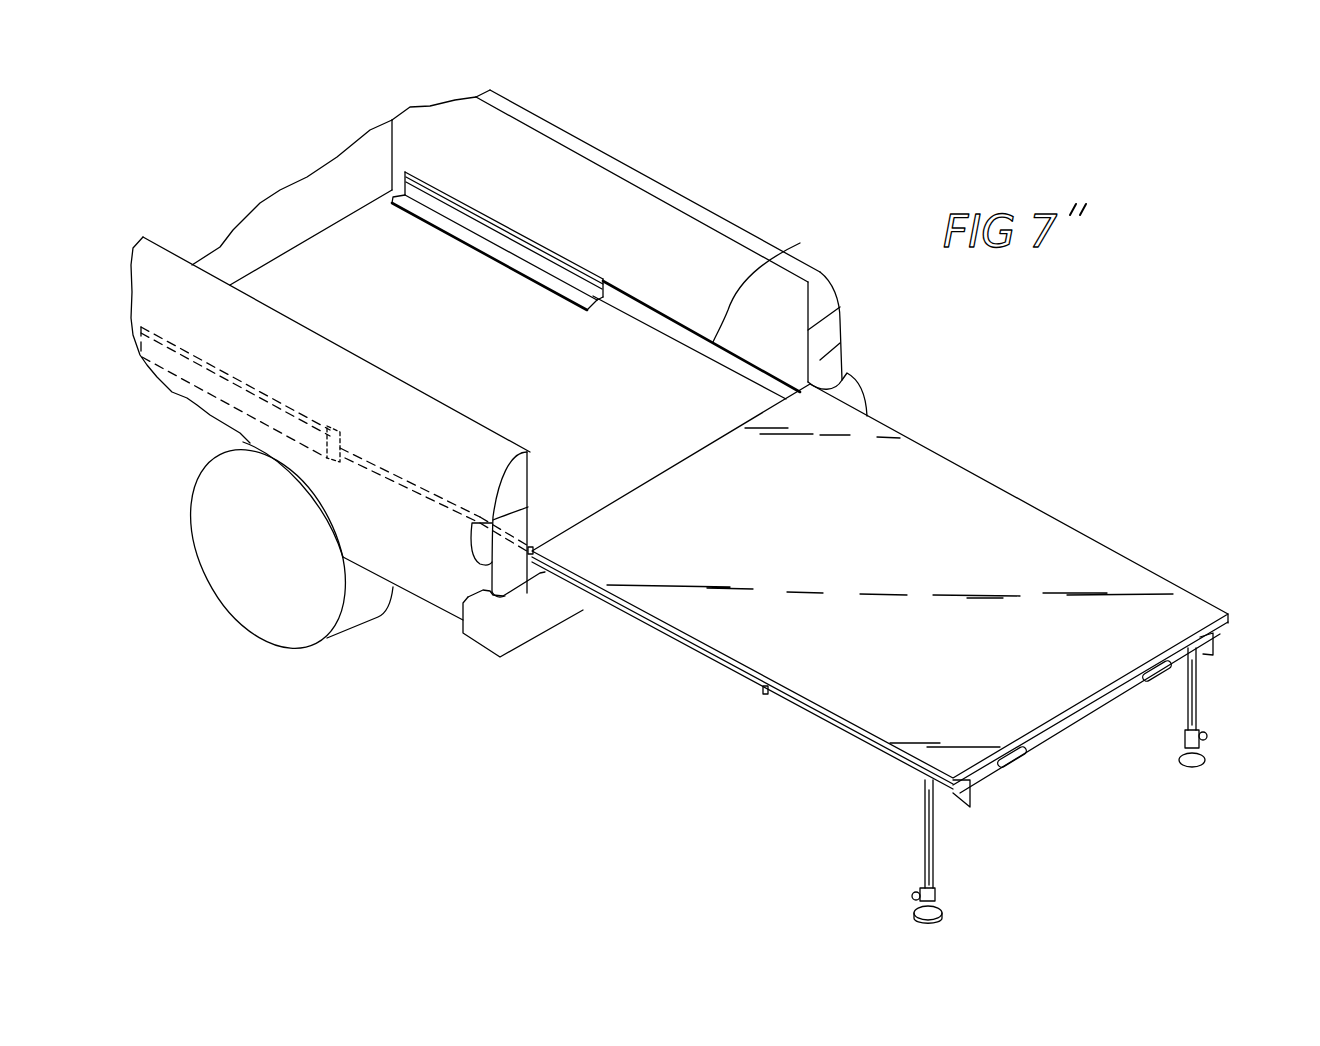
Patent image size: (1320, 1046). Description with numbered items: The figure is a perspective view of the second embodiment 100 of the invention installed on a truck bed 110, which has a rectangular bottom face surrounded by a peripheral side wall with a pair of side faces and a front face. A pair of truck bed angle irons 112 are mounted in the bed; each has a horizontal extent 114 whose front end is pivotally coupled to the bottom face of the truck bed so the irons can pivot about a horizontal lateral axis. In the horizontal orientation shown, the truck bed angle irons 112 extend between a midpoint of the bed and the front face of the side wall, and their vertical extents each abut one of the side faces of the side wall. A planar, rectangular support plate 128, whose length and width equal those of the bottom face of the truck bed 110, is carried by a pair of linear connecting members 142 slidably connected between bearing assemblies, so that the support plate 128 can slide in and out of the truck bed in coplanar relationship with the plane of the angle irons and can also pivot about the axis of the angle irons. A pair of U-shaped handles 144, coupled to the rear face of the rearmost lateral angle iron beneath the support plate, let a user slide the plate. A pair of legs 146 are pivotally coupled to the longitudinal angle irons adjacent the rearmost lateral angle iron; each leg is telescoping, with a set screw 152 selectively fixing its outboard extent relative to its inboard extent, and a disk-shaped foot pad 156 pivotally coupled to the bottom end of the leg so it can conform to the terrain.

The second embodiment 100 is at (860, 233).
The truck bed 110 is at (640, 180).
The truck bed angle irons 112 is at (403, 202).
The horizontal extent 114 is at (440, 226).
The support plate 128 is at (988, 513).
The linear connecting members 142 is at (800, 243).
The U-shaped handles 144 is at (1020, 762).
The legs 146 is at (1195, 692).
The set screw 152 is at (917, 895).
The foot pad 156 is at (943, 910).